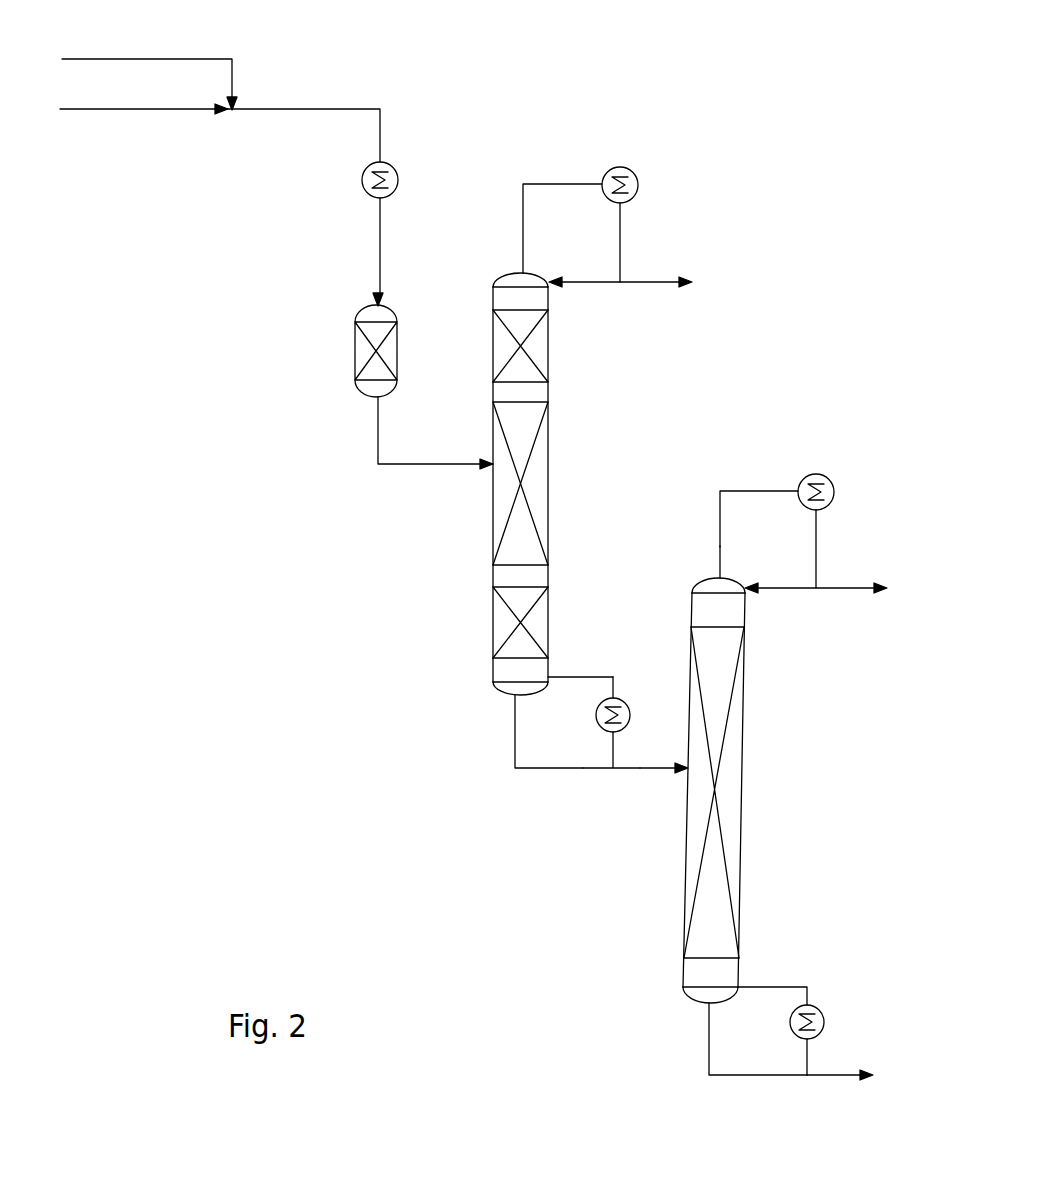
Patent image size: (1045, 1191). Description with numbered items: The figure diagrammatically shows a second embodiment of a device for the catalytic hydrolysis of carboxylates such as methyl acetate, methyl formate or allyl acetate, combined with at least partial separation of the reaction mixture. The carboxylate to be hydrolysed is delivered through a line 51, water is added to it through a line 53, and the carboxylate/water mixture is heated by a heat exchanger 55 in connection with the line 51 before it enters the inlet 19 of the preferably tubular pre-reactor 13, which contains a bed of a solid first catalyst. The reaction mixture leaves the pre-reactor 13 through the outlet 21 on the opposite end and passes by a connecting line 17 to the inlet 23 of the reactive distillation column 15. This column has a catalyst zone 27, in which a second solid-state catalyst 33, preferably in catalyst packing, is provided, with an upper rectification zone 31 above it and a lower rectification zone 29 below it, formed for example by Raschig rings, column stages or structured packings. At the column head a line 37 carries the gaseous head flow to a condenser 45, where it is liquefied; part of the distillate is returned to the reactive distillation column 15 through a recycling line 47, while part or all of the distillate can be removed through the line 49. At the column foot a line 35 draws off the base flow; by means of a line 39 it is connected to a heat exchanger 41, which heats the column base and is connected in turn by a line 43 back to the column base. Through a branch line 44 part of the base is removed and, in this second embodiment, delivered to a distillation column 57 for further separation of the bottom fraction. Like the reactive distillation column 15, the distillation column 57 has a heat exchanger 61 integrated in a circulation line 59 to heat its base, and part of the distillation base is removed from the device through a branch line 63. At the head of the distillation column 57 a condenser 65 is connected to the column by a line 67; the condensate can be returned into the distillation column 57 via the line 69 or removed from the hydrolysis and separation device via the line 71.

The pre-reactor 13 is at (355, 357).
The reactive distillation column 15 is at (570, 407).
The connecting line 17 is at (372, 458).
The inlet 19 is at (355, 312).
The outlet 21 is at (358, 394).
The inlet 23 is at (492, 468).
The catalyst zone 27 is at (550, 472).
The lower rectification zone 29 is at (549, 623).
The upper rectification zone 31 is at (540, 343).
The second solid-state catalyst 33 is at (535, 503).
The line for drawing off the base flow 35 is at (515, 735).
The line for drawing off the head flow 37 is at (523, 223).
The line 39 is at (611, 756).
The heat exchanger 41 is at (634, 722).
The line 43 is at (568, 680).
The branch line 44 is at (661, 773).
The condenser 45 is at (639, 185).
The recycling line 47 is at (624, 228).
The line 49 is at (650, 284).
The line 51 is at (187, 114).
The line 53 is at (197, 59).
The heat exchanger 55 is at (362, 180).
The distillation column 57 is at (785, 718).
The circulation line 59 is at (775, 987).
The heat exchanger 61 is at (824, 1022).
The branch line 63 is at (832, 1080).
The condenser 65 is at (835, 491).
The line 67 is at (720, 546).
The line 69 is at (813, 557).
The line 71 is at (842, 594).